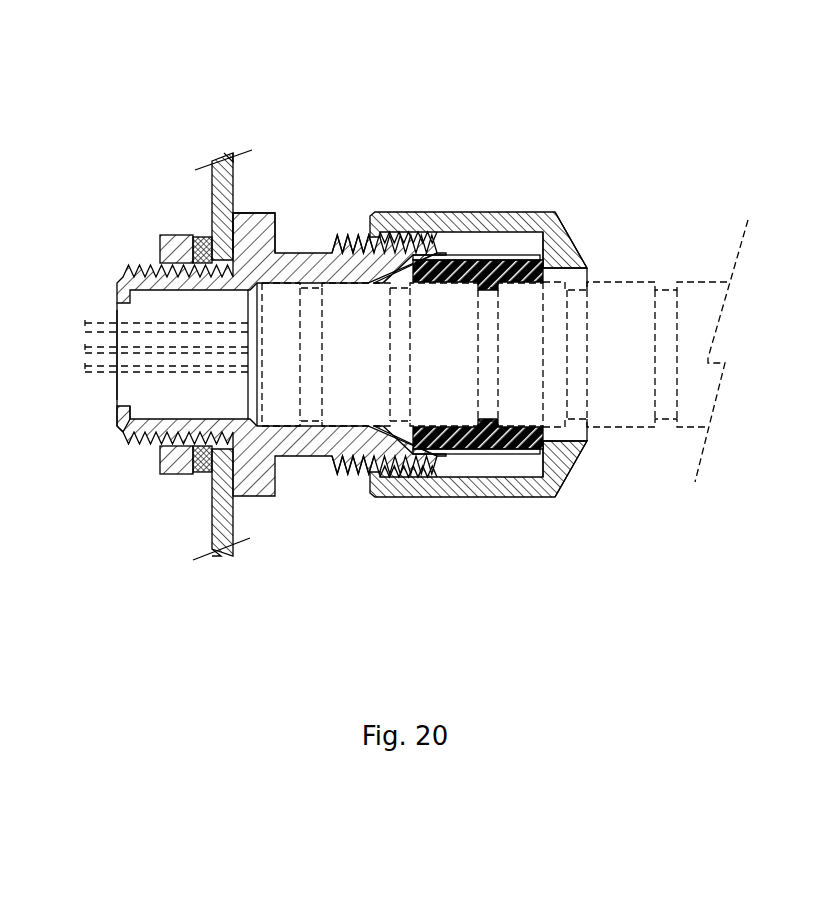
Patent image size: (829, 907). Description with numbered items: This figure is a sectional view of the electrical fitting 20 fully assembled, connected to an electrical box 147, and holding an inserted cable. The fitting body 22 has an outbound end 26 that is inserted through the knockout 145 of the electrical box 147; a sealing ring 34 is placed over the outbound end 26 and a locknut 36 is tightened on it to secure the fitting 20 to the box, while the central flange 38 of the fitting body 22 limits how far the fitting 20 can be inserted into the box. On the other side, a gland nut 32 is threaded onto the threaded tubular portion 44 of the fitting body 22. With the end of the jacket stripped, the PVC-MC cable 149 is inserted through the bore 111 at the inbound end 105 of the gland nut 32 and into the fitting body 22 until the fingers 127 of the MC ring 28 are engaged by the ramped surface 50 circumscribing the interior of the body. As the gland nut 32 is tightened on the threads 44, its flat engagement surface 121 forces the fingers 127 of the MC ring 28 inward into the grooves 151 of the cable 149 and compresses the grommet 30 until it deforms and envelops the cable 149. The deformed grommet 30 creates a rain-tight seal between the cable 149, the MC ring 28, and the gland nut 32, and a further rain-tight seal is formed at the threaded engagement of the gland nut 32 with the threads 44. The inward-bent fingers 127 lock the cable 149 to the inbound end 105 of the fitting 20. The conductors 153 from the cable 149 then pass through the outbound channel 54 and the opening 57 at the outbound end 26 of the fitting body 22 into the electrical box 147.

The electrical fitting 20 is at (500, 114).
The fitting body 22 is at (305, 457).
The outbound end 26 is at (115, 420).
The MC ring 28 is at (503, 455).
The grommet 30 is at (530, 458).
The gland nut 32 is at (436, 212).
The sealing ring 34 is at (200, 474).
The locknut 36 is at (190, 474).
The central flange 38 is at (248, 212).
The threaded tubular portion 44 is at (357, 235).
The ramped surface 50 is at (383, 280).
The outbound channel 54 is at (216, 354).
The opening 57 is at (115, 395).
The inbound end 105 is at (590, 357).
The bore 111 is at (582, 279).
The flat engagement surface 121 is at (536, 245).
The fingers 127 is at (385, 470).
The knockout 145 is at (212, 247).
The electrical box 147 is at (212, 187).
The PVC-MC cable 149 is at (627, 428).
The grooves 151 is at (402, 356).
The conductors 153 is at (98, 322).